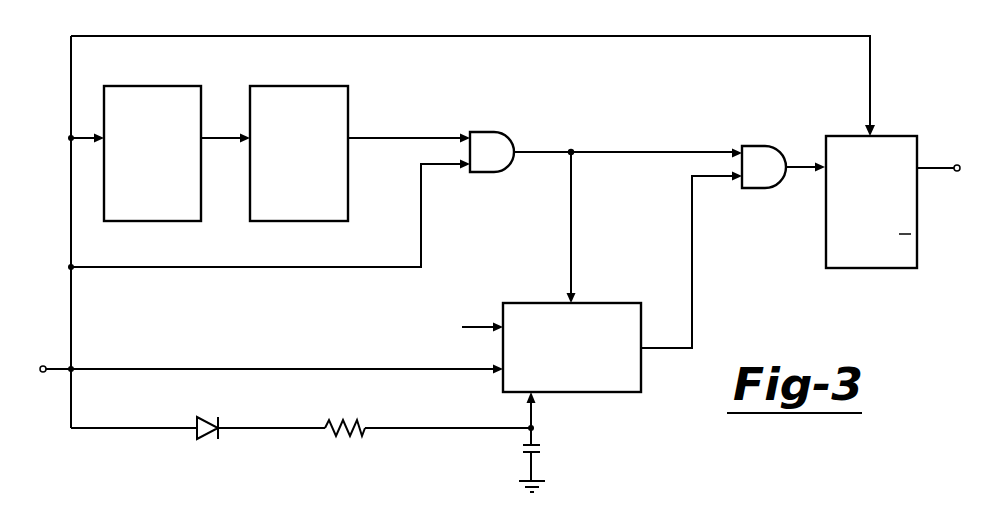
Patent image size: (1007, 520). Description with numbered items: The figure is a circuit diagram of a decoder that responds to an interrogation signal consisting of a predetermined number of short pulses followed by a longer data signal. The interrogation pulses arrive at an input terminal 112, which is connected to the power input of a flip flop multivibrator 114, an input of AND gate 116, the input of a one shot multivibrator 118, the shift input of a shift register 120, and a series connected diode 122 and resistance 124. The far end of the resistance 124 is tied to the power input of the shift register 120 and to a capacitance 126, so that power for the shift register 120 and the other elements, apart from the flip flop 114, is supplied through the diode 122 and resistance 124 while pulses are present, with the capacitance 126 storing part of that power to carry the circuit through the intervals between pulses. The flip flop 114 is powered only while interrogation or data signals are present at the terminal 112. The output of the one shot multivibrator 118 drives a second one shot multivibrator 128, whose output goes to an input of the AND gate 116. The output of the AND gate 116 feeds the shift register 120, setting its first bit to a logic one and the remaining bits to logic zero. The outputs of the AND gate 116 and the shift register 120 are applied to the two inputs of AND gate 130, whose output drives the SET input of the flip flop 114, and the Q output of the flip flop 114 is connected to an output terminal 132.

The input terminal 112 is at (43, 364).
The flip flop multivibrator 114 is at (892, 135).
The AND gate 116 is at (484, 130).
The one shot multivibrator 118 is at (177, 221).
The shift register 120 is at (530, 302).
The diode 122 is at (196, 436).
The resistance 124 is at (345, 437).
The capacitance 126 is at (540, 443).
The second one shot multivibrator 128 is at (267, 221).
The AND gate 130 is at (757, 145).
The output terminal 132 is at (957, 172).